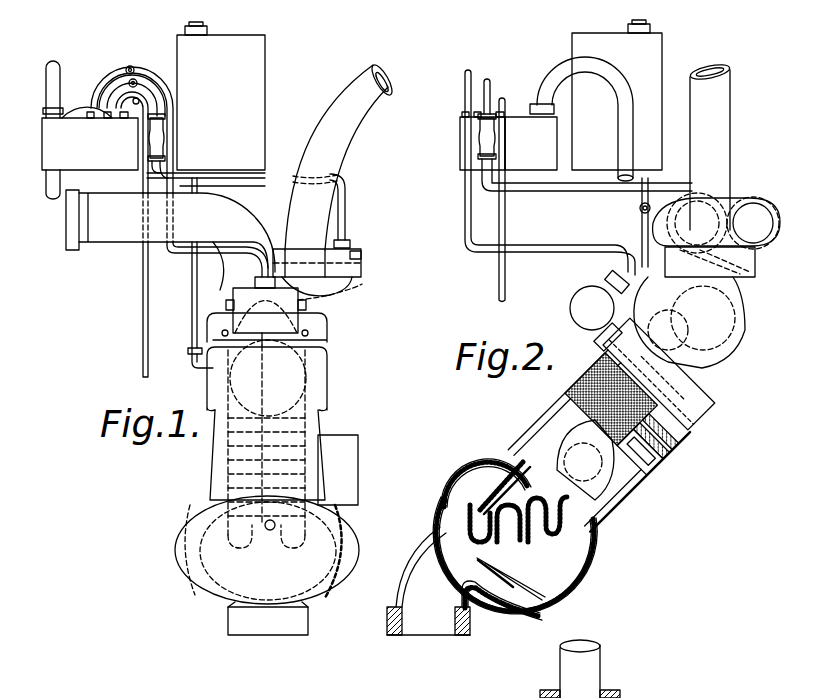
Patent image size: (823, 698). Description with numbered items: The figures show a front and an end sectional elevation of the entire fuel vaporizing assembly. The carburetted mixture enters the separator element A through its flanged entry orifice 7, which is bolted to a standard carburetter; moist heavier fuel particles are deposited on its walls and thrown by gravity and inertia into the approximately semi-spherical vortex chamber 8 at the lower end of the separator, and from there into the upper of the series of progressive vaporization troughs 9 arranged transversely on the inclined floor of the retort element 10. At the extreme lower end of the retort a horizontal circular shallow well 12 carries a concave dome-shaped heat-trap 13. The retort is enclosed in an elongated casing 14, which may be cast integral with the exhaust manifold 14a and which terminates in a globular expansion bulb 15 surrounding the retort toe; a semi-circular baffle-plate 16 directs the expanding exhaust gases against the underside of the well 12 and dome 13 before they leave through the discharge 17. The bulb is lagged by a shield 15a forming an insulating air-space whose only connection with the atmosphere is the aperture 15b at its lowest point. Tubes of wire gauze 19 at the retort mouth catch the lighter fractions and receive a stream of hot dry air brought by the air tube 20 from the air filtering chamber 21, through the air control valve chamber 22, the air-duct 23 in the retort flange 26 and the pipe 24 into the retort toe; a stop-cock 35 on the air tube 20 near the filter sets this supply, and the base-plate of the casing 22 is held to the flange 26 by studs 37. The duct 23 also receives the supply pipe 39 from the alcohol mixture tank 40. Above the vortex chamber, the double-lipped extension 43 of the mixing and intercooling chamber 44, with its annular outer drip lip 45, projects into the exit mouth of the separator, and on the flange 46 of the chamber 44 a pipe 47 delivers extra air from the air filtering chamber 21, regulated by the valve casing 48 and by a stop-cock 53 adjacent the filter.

In FIG. 1, the flanged entry orifice 7 is at (66, 222).
In FIG. 2, the flanged entry orifice 7 is at (668, 205).
In FIG. 1, the vortex chamber 8 is at (298, 322).
In FIG. 1, the progressive vaporization troughs 9 is at (322, 388).
In FIG. 2, the progressive vaporization troughs 9 is at (657, 410).
In FIG. 2, the retort element 10 is at (522, 493).
In FIG. 2, the circular shallow trough or well 12 is at (548, 530).
In FIG. 1, the heat-trap 13 is at (285, 527).
In FIG. 2, the heat-trap 13 is at (512, 515).
In FIG. 1, the casing or shroud 14 is at (320, 422).
In FIG. 2, the casing or shroud 14 is at (588, 386).
In FIG. 1, the exhaust manifold 14a is at (337, 462).
In FIG. 2, the exhaust manifold 14a is at (567, 426).
In FIG. 1, the expansion chamber or bulb 15 is at (335, 542).
In FIG. 2, the expansion chamber or bulb 15 is at (600, 558).
In FIG. 1, the shield 15a is at (178, 545).
In FIG. 2, the shield 15a is at (452, 482).
In FIG. 2, the aperture 15b is at (537, 618).
In FIG. 2, the deflector or baffle-plate 16 is at (477, 560).
In FIG. 1, the discharge 17 is at (275, 638).
In FIG. 2, the discharge 17 is at (464, 581).
In FIG. 2, the tubes of wire gauze 19 is at (584, 393).
In FIG. 1, the air tube 20 is at (165, 75).
In FIG. 2, the air tube 20 is at (566, 247).
In FIG. 1, the air filtering chamber 21 is at (90, 130).
In FIG. 2, the air filtering chamber 21 is at (508, 141).
In FIG. 1, the air control valve chamber 22 is at (266, 305).
In FIG. 2, the air control valve chamber 22 is at (599, 300).
In FIG. 2, the air-duct 23 is at (600, 336).
In FIG. 1, the pipe 24 is at (268, 528).
In FIG. 2, the pipe 24 is at (477, 510).
In FIG. 2, the flange of the retort 26 is at (704, 415).
In FIG. 1, the stop-cock 35 is at (129, 66).
In FIG. 1, the studs 37 is at (330, 340).
In FIG. 2, the supply pipe 39 is at (641, 229).
In FIG. 1, the alcohol mixture tank 40 is at (206, 104).
In FIG. 2, the alcohol mixture tank 40 is at (596, 100).
In FIG. 1, the double-lipped extension 43 is at (362, 265).
In FIG. 1, the mixing and intercooling chamber 44 is at (352, 142).
In FIG. 2, the mixing and intercooling chamber 44 is at (718, 118).
In FIG. 1, the annular outer drip lip 45 is at (340, 300).
In FIG. 1, the flange 46 is at (362, 254).
In FIG. 2, the flange 46 is at (665, 258).
In FIG. 1, the pipe 47 is at (347, 210).
In FIG. 2, the pipe 47 is at (548, 192).
In FIG. 1, the casing 48 is at (163, 135).
In FIG. 2, the casing 48 is at (478, 135).
In FIG. 1, the stop-cock 53 is at (129, 81).
In FIG. 1, the separator element A is at (248, 224).
In FIG. 2, the separator element A is at (742, 203).